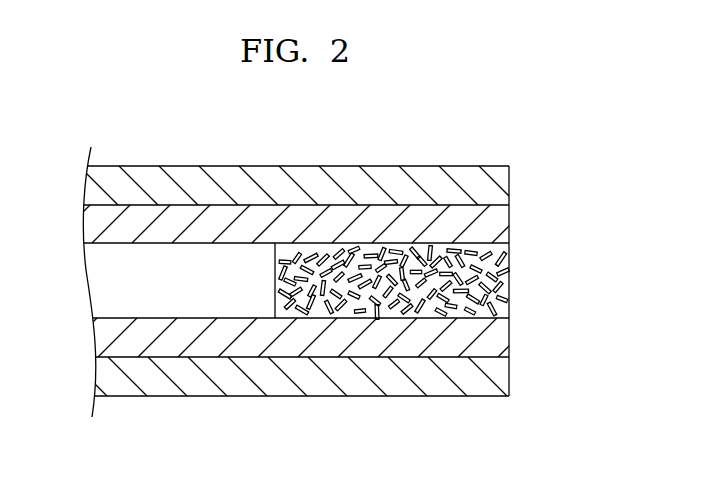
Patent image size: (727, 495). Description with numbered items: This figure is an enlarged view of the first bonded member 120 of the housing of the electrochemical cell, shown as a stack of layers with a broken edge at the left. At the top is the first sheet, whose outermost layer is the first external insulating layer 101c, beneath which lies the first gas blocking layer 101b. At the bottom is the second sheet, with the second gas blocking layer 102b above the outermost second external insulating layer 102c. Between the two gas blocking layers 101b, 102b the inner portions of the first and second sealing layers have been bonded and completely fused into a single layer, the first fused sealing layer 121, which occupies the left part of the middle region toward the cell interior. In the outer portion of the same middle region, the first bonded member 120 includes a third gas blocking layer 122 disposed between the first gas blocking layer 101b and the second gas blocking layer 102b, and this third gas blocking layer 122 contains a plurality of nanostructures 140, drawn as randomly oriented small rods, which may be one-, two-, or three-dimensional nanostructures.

The first gas blocking layer 101b is at (177, 218).
The first external insulating layer 101c is at (303, 178).
The second gas blocking layer 102b is at (279, 347).
The second external insulating layer 102c is at (365, 387).
The first bonded member 120 is at (452, 397).
The first fused sealing layer 121 is at (197, 396).
The third gas blocking layer 122 is at (504, 256).
The nanostructures 140 is at (430, 281).